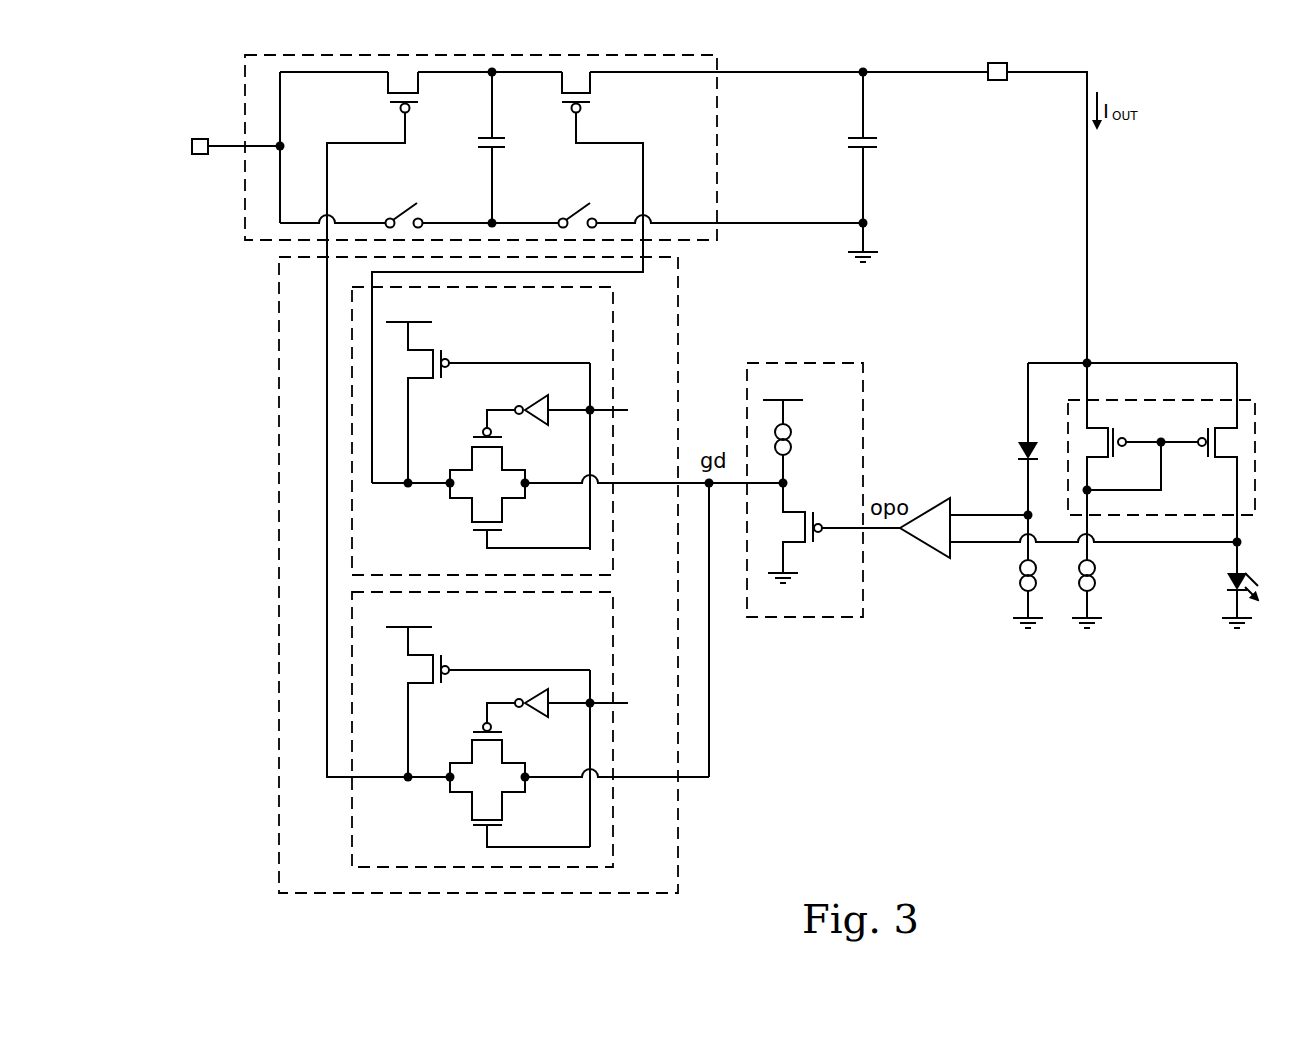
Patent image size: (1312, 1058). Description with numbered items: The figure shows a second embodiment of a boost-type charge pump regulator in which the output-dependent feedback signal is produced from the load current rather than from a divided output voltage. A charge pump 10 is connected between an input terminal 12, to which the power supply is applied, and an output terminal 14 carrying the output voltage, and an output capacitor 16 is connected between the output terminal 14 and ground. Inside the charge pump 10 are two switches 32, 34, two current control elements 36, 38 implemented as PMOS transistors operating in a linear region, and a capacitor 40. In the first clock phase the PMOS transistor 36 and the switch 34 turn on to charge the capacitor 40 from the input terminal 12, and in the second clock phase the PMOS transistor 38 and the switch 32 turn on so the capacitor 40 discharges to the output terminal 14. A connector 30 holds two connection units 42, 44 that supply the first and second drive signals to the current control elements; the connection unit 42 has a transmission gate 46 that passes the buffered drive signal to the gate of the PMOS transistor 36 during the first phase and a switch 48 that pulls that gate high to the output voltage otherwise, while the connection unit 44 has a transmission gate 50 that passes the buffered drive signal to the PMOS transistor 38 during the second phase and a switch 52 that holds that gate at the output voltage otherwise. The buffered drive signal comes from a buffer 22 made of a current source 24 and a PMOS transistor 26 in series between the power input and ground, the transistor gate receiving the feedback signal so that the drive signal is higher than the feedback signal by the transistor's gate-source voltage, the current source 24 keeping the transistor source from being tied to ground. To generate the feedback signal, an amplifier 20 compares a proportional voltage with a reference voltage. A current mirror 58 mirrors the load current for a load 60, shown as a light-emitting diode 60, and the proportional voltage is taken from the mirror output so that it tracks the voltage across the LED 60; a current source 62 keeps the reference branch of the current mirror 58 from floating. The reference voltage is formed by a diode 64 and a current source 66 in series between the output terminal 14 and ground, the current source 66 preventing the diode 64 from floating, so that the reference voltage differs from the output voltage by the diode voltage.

The charge pump 10 is at (717, 150).
The input terminal 12 is at (278, 148).
The output terminal 14 is at (995, 80).
The output capacitor 16 is at (843, 157).
The amplifier 20 is at (923, 498).
The buffer 22 is at (812, 458).
The current source 24 is at (803, 438).
The PMOS transistor 26 is at (817, 553).
The connector 30 is at (279, 563).
The switch 32 is at (402, 202).
The switch 34 is at (575, 202).
The current control element 36 is at (376, 98).
The current control element 38 is at (606, 91).
The capacitor 40 is at (482, 156).
The connection unit 42 is at (464, 729).
The connection unit 44 is at (445, 431).
The transmission gate 46 is at (443, 808).
The switch 48 is at (445, 645).
The transmission gate 50 is at (443, 509).
The switch 52 is at (445, 340).
The current mirror 58 is at (1160, 400).
The light-emitting diode 60 is at (1210, 580).
The current source 62 is at (1106, 583).
The diode 64 is at (1015, 434).
The current source 66 is at (1008, 583).